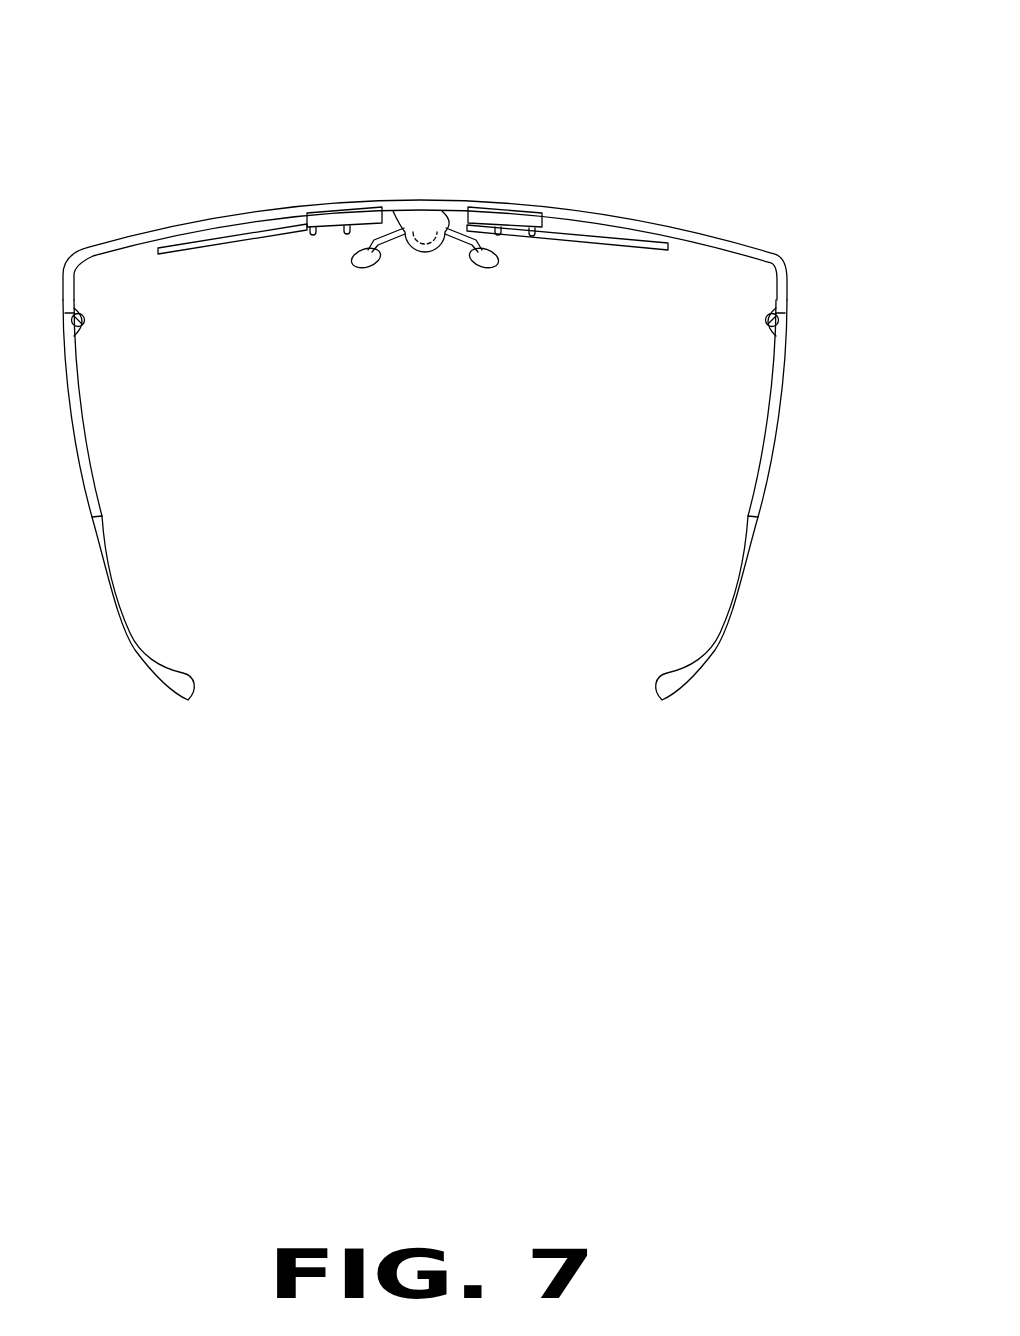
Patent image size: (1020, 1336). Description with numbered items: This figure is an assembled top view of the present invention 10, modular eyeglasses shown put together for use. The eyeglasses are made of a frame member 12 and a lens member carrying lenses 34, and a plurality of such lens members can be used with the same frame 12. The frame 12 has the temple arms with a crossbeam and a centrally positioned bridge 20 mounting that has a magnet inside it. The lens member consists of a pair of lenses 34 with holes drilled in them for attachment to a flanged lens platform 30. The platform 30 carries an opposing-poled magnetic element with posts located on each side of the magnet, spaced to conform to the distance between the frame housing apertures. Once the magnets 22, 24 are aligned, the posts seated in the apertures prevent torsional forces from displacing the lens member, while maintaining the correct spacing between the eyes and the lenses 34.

The present invention 10 is at (642, 175).
The frame member 12 is at (135, 235).
The bridge 20 is at (427, 258).
The magnet 22 is at (435, 223).
The magnet 24 is at (424, 217).
The flanged lens platform 30 is at (427, 220).
The lens 34 is at (243, 228).